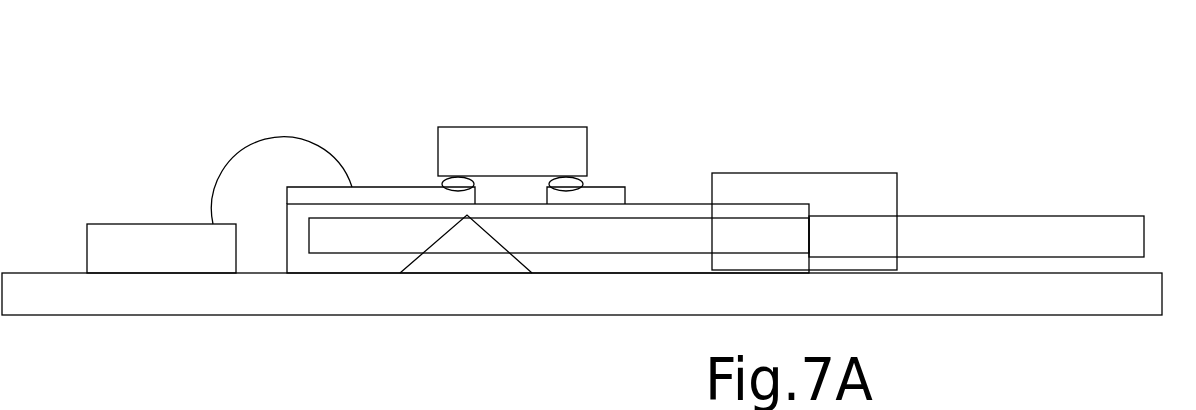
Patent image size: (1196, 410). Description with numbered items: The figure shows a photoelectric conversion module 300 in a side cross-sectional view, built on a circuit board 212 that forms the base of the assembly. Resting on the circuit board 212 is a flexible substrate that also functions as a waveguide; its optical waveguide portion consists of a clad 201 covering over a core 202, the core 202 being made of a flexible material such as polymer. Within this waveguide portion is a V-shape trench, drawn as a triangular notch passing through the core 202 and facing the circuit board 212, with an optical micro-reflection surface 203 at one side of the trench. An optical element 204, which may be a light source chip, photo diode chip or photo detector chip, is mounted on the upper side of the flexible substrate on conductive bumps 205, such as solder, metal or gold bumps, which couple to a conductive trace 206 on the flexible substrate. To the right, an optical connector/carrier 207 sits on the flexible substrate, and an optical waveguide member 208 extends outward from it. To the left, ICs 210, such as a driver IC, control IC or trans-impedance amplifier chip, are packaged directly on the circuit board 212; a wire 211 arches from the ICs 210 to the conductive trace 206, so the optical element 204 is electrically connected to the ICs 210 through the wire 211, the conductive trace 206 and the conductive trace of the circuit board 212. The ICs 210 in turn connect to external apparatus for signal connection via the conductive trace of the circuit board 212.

The photoelectric conversion module 300 is at (702, 105).
The clad 201 is at (355, 260).
The core 202 is at (595, 248).
The optical micro-reflection surface 203 is at (495, 242).
The optical element 204 is at (515, 150).
The conductive bump 205 is at (565, 187).
The conductive trace 206 is at (410, 195).
The optical connector/carrier 207 is at (853, 187).
The optical waveguide member 208 is at (1057, 245).
The ICs 210 is at (125, 242).
The wire 211 is at (242, 168).
The circuit board 212 is at (207, 297).